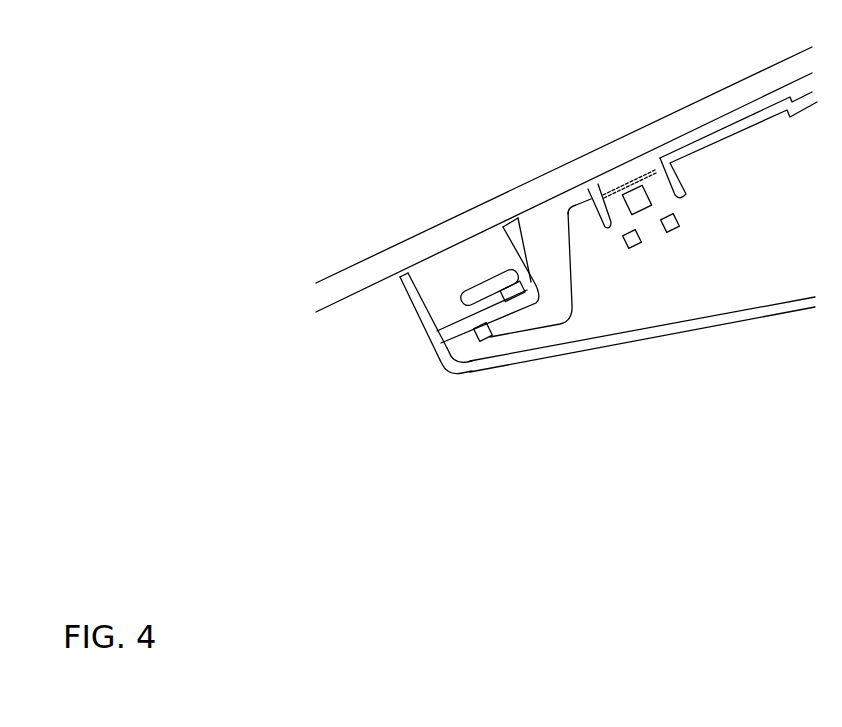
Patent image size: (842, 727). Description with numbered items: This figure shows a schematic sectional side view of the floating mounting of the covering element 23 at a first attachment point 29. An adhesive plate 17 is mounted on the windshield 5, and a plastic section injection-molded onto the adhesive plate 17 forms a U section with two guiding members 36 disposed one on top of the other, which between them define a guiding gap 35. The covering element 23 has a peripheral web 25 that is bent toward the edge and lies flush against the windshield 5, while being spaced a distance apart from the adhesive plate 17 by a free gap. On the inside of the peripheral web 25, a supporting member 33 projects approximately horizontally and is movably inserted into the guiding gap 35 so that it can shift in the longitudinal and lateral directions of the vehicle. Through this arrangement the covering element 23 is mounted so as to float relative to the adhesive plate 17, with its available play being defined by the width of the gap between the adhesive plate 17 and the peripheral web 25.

The windshield 5 is at (369, 260).
The adhesive plate 17 is at (543, 230).
The covering element 23 is at (642, 341).
The peripheral web 25 is at (406, 303).
The first attachment point 29 is at (476, 352).
The supporting member 33 is at (458, 333).
The guiding gap 35 is at (532, 296).
The guiding members 36 is at (478, 296).